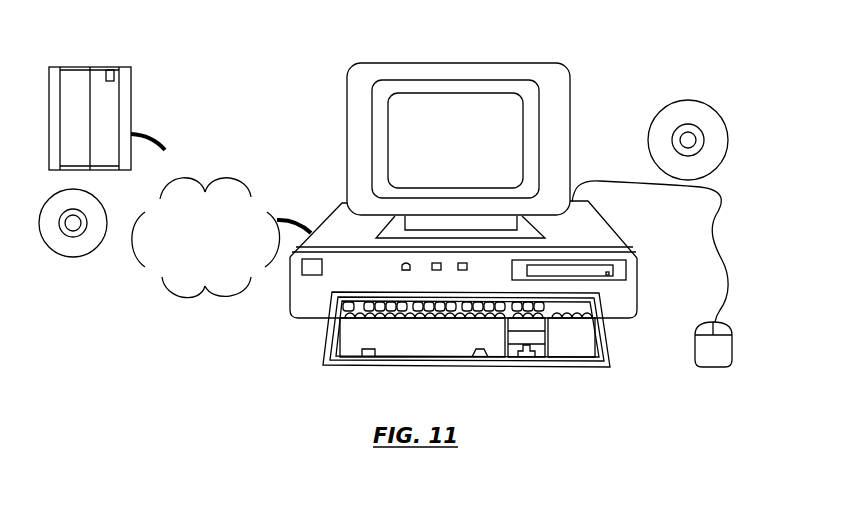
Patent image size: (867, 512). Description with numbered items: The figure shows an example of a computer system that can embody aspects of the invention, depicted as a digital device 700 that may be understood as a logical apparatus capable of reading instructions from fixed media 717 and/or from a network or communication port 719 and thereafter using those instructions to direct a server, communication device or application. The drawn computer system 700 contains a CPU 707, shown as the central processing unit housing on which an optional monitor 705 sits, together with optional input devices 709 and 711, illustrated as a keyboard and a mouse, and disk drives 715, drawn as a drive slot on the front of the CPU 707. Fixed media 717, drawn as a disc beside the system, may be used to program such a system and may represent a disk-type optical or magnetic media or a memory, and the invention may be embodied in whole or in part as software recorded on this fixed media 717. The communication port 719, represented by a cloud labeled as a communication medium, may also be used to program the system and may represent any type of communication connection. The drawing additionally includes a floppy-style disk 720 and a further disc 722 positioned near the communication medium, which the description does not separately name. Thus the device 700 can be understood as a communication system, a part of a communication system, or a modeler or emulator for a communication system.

The digital device 700 is at (666, 79).
The monitor 705 is at (507, 125).
The CPU 707 is at (601, 232).
The input device 709 is at (381, 362).
The input device 711 is at (718, 351).
The disk drive 715 is at (638, 262).
The fixed media 717 is at (722, 112).
The communication port 719 is at (279, 215).
The floppy disk 720 is at (113, 67).
The optical disc 722 is at (99, 200).